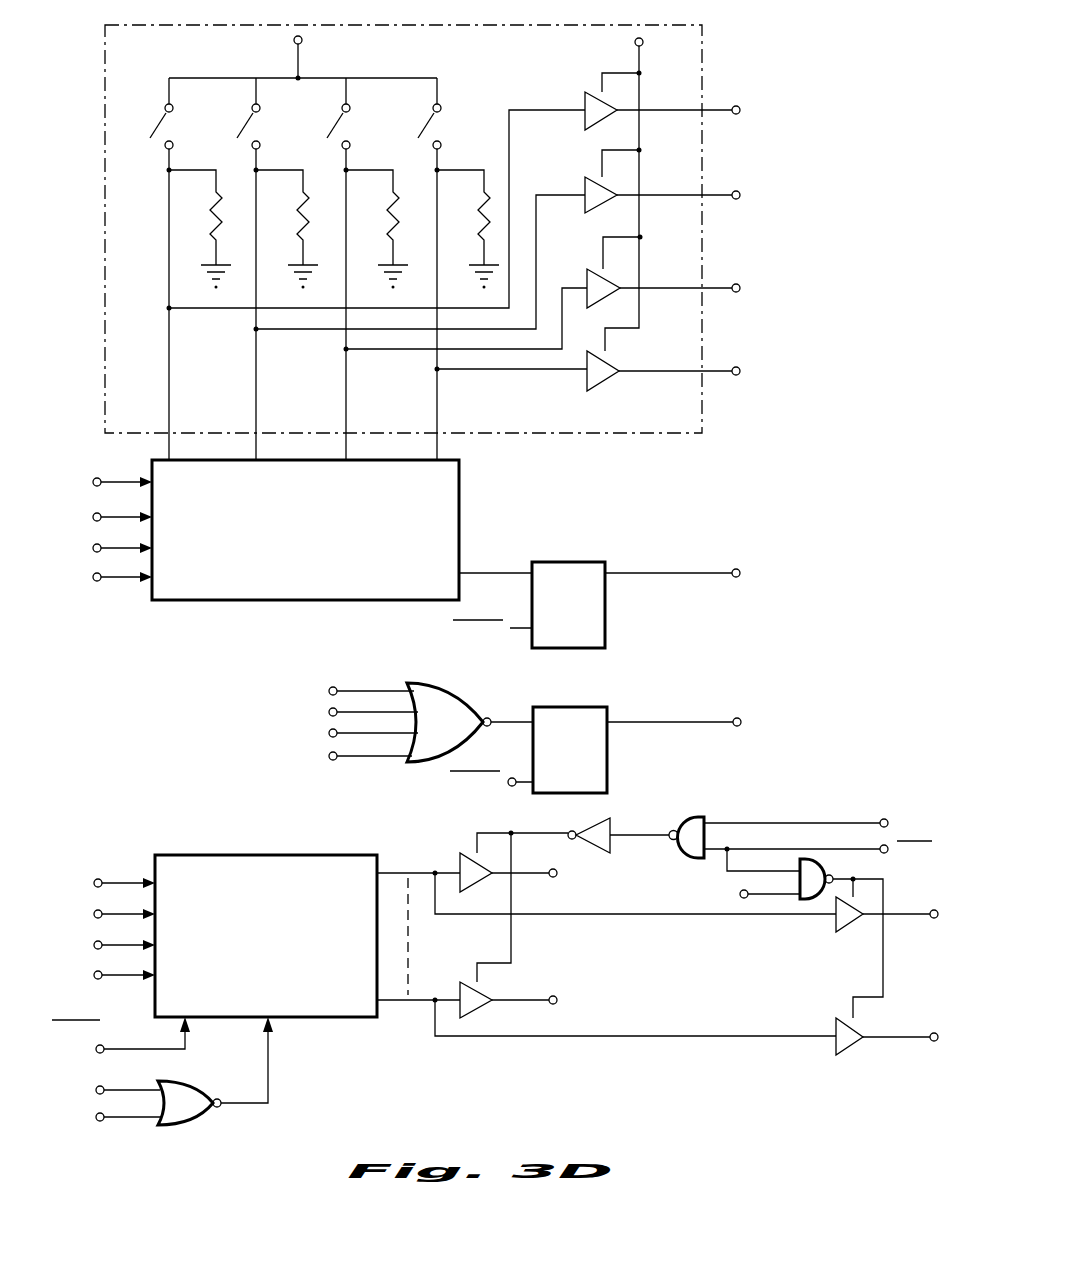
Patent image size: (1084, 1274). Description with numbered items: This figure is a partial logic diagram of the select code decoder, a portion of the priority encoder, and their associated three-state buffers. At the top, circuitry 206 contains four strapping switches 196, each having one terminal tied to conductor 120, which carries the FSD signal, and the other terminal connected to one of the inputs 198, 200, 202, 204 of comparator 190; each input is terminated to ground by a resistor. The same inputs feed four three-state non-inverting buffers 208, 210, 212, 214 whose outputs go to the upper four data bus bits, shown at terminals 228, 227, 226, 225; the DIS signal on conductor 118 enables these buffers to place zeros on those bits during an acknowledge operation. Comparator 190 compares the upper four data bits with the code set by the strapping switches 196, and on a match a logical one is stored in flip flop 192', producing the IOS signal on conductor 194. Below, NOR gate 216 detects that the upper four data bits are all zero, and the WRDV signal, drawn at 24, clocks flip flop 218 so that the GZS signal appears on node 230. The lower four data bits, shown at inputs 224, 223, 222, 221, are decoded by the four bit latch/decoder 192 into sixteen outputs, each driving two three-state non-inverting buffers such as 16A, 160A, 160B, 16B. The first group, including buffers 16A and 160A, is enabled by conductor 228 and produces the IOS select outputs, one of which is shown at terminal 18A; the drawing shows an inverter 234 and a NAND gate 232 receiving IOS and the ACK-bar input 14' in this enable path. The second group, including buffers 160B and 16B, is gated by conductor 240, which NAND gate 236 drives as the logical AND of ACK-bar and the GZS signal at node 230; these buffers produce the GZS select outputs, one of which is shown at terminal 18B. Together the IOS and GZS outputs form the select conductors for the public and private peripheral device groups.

The strapping switches 196 is at (149, 88).
The conductor 120 is at (294, 40).
The conductor 118 is at (635, 42).
The input 198 is at (169, 381).
The input 200 is at (256, 381).
The input 202 is at (346, 381).
The input 204 is at (437, 377).
The circuitry 206 is at (702, 433).
The three-state non-inverting buffer 208 is at (611, 122).
The three-state non-inverting buffer 210 is at (611, 207).
The three-state non-inverting buffer 212 is at (612, 300).
The three-state non-inverting buffer 214 is at (611, 383).
The conductor 228 is at (737, 106).
The data bus line DB6 227 is at (737, 191).
The data bus line DB5 226 is at (737, 284).
The data bus line DB4 225 is at (737, 367).
The comparator 190 is at (185, 600).
The flip flop 192' is at (546, 589).
The conductor 194 is at (736, 569).
The NOR gate 216 is at (440, 684).
The flip flop 218 is at (583, 707).
The node 230 is at (737, 718).
The WRDV line 24 is at (512, 786).
The four bit latch/four-to-sixteen line decoder 192 is at (281, 918).
The data bus line DB3 224 is at (97, 879).
The data bus line DB2 223 is at (97, 910).
The data bus line DB1 222 is at (97, 941).
The data bus line DB0 221 is at (97, 971).
The three-state non-inverting buffer 16A is at (480, 882).
The IOS0 output terminal 18A is at (555, 877).
The three-state non-inverting buffer 160A is at (480, 1010).
The inverter 234 is at (608, 826).
The NAND gate 232 is at (690, 860).
The NAND gate 236 is at (812, 859).
The ACK line 14' is at (887, 843).
The conductor 240 is at (883, 879).
The three-state non-inverting buffer 160B is at (852, 922).
The three-state non-inverting buffer 16B is at (857, 1046).
The GZS15 output terminal 18B is at (934, 1041).